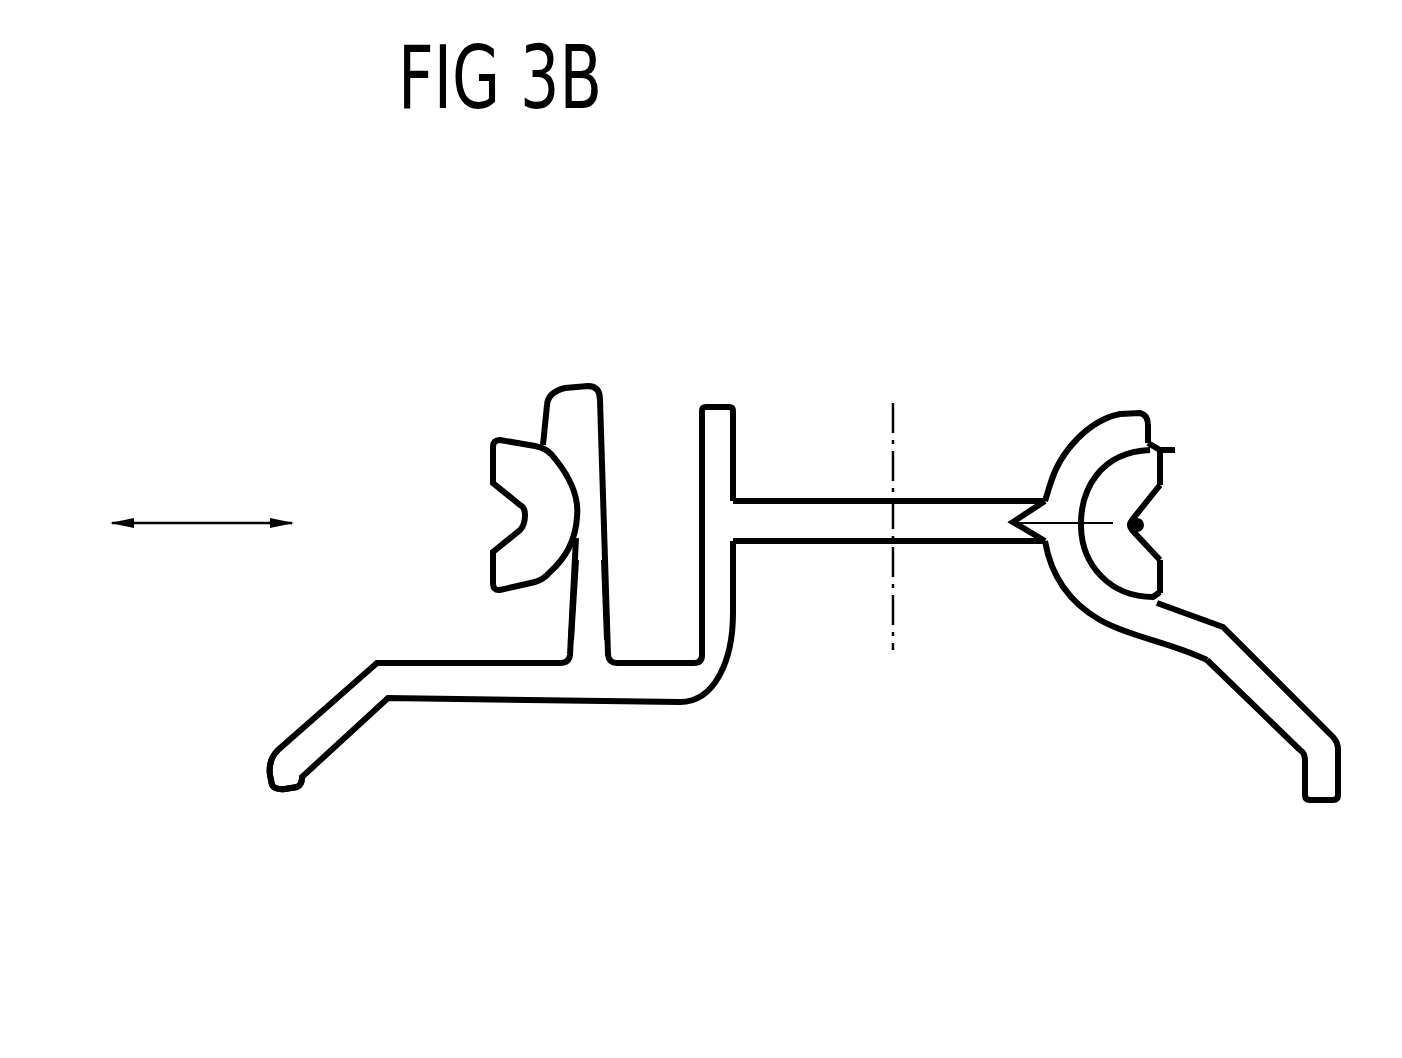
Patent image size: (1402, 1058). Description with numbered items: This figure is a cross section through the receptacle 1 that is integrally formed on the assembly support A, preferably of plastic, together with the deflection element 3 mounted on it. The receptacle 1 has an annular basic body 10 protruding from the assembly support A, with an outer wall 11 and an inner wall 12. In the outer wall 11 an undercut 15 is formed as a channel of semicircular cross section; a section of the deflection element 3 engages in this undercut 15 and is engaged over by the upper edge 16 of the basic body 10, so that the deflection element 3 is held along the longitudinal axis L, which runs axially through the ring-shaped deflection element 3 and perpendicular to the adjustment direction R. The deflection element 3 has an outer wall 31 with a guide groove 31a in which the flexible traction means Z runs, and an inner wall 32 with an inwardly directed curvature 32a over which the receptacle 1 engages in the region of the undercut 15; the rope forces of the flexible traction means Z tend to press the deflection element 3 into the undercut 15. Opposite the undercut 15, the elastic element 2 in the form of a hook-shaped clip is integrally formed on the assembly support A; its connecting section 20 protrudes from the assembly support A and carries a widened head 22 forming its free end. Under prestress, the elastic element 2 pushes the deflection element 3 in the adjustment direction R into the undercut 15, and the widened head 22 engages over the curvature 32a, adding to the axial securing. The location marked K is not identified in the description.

The receptacle 1 is at (738, 460).
The elastic element 2 is at (600, 393).
The deflection element 3 is at (1167, 447).
The basic body 10 is at (720, 407).
The outer wall 11 is at (698, 622).
The inner wall 12 is at (733, 612).
The undercut 15 is at (1088, 496).
The upper edge 16 is at (1130, 412).
The connecting section 20 is at (583, 607).
The widened head 22 is at (563, 412).
The outer wall 31 is at (1142, 573).
The guide groove 31a is at (1143, 537).
The inner wall 32 is at (1127, 592).
The curvature 32a is at (1085, 548).
The assembly support A is at (290, 772).
The contact point K is at (1068, 515).
The longitudinal axis L is at (895, 458).
The adjustment direction R is at (202, 497).
The flexible traction means Z is at (1145, 525).